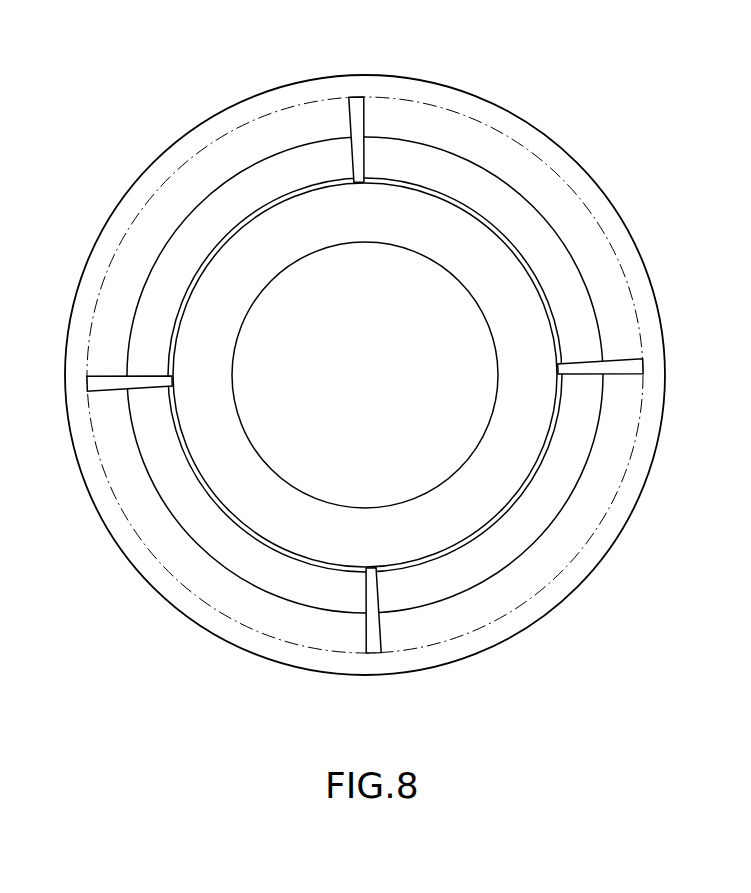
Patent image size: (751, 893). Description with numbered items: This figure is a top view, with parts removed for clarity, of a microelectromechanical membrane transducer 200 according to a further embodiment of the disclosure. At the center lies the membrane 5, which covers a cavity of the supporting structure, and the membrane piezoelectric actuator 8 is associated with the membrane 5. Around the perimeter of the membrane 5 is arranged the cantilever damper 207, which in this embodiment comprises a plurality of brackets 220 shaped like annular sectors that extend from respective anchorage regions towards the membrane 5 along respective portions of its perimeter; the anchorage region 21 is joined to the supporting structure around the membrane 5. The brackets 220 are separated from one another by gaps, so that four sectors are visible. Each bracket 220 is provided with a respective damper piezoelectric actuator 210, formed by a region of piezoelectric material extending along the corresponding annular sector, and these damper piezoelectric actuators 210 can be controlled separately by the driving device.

The microelectromechanical membrane transducer 200 is at (158, 112).
The anchorage region 21 is at (183, 605).
The brackets 220 is at (262, 133).
The damper piezoelectric actuator 210 is at (173, 252).
The membrane 5 is at (505, 445).
The membrane piezoelectric actuator 8 is at (371, 389).
The cantilever damper 207 is at (375, 121).